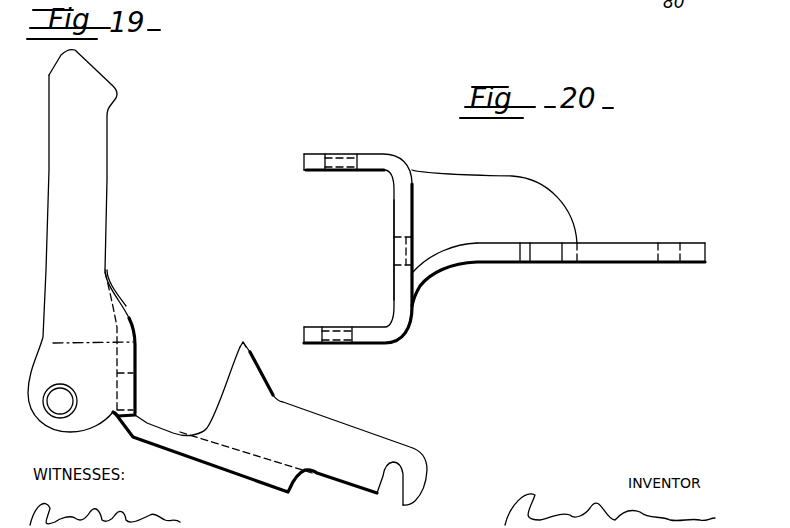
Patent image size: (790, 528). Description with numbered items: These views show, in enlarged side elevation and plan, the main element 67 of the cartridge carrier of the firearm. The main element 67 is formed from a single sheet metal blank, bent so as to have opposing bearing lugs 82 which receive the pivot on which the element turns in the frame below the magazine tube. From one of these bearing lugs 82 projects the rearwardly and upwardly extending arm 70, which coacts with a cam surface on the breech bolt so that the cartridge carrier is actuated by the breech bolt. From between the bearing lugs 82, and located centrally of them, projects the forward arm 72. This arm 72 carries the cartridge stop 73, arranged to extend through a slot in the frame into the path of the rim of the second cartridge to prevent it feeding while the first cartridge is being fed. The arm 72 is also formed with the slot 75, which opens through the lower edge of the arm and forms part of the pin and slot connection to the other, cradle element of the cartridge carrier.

In FIG. 19, the main element of the cartridge carrier 67 is at (100, 290).
In FIG. 20, the main element of the cartridge carrier 67 is at (399, 220).
In FIG. 19, the arm 70 is at (95, 118).
In FIG. 20, the arm 70 is at (367, 338).
In FIG. 19, the arm 72 is at (320, 427).
In FIG. 20, the arm 72 is at (600, 258).
In FIG. 19, the cartridge stop 73 is at (243, 342).
In FIG. 20, the cartridge stop 73 is at (523, 262).
In FIG. 19, the slot 75 is at (383, 484).
In FIG. 19, the bearing lugs 82 is at (39, 403).
In FIG. 20, the bearing lugs 82 is at (322, 165).